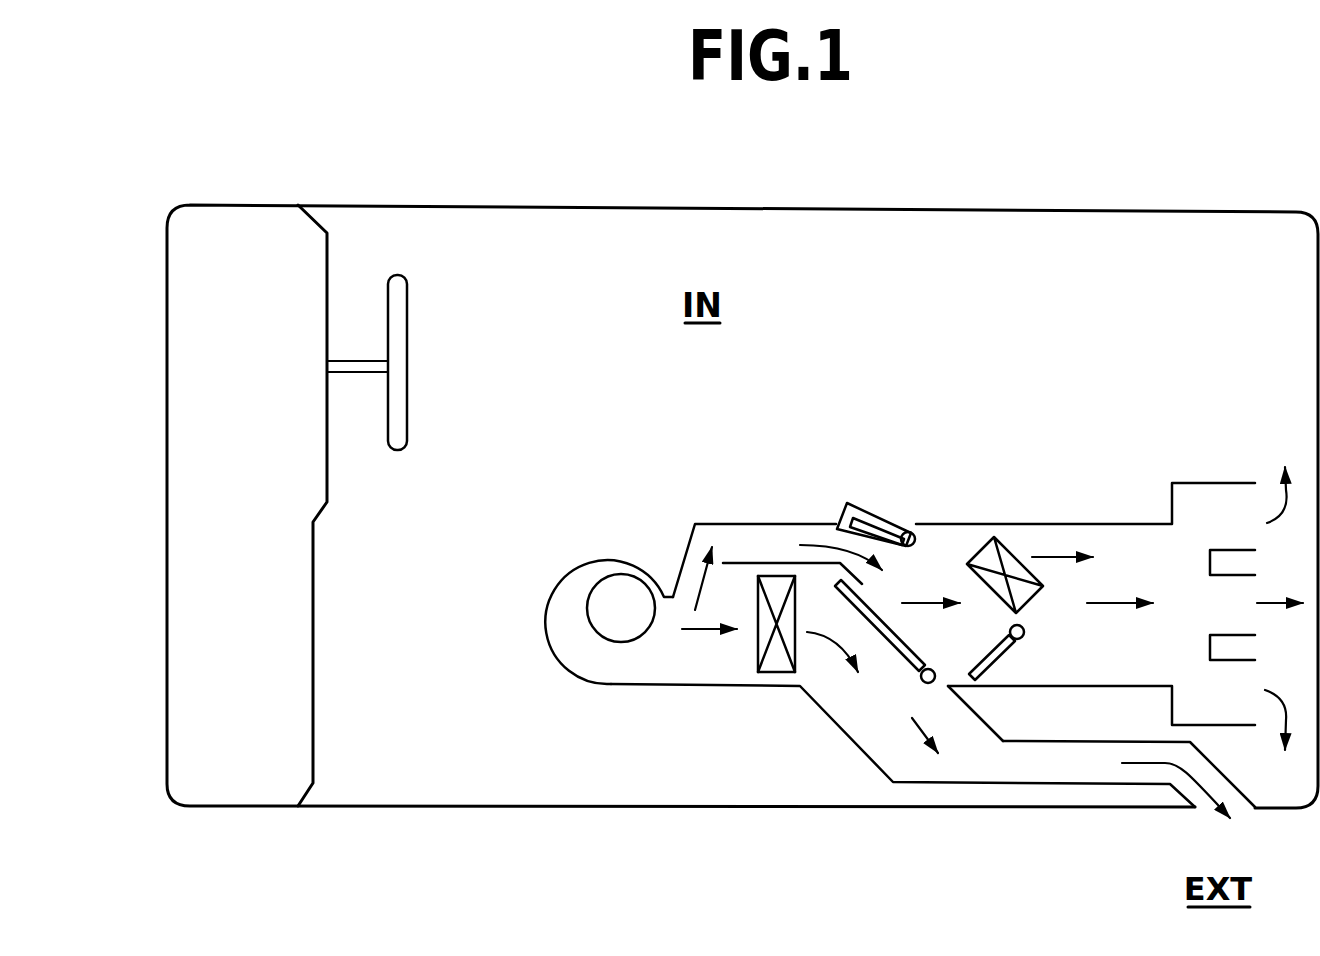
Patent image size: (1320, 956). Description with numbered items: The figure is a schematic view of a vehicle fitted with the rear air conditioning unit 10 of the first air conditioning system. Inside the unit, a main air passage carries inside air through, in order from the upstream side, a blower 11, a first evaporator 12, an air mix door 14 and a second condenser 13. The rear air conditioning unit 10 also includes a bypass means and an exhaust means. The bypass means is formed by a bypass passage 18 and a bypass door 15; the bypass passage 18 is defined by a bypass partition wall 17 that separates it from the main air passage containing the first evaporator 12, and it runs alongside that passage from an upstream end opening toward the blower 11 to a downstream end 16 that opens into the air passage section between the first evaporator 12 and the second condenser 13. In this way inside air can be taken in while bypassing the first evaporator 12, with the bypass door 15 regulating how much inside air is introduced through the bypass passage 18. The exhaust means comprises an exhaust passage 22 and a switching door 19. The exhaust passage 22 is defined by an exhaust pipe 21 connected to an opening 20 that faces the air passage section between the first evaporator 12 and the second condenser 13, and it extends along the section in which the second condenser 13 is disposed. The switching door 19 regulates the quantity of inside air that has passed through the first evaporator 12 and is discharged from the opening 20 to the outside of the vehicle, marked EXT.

The rear air conditioning unit 10 is at (665, 686).
The blower 11 is at (620, 575).
The first evaporator 12 is at (753, 655).
The second condenser 13 is at (985, 540).
The air mix door 14 is at (1008, 656).
The bypass door 15 is at (878, 517).
The downstream end 16 is at (837, 525).
The bypass partition wall 17 is at (731, 563).
The bypass passage 18 is at (772, 537).
The switching door 19 is at (897, 650).
The opening 20 is at (835, 693).
The exhaust pipe 21 is at (1092, 743).
The exhaust passage 22 is at (1045, 757).